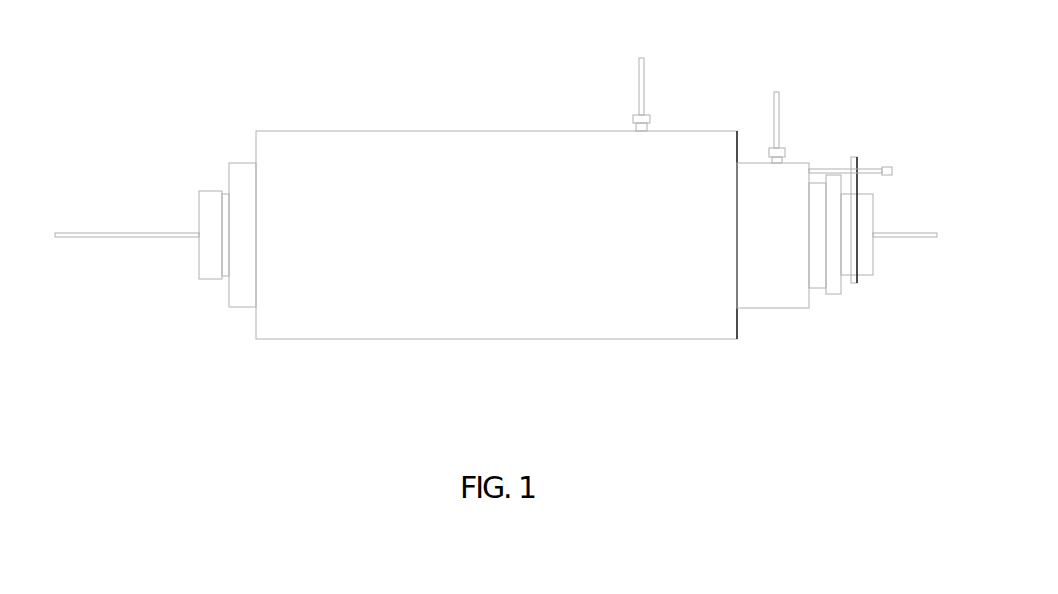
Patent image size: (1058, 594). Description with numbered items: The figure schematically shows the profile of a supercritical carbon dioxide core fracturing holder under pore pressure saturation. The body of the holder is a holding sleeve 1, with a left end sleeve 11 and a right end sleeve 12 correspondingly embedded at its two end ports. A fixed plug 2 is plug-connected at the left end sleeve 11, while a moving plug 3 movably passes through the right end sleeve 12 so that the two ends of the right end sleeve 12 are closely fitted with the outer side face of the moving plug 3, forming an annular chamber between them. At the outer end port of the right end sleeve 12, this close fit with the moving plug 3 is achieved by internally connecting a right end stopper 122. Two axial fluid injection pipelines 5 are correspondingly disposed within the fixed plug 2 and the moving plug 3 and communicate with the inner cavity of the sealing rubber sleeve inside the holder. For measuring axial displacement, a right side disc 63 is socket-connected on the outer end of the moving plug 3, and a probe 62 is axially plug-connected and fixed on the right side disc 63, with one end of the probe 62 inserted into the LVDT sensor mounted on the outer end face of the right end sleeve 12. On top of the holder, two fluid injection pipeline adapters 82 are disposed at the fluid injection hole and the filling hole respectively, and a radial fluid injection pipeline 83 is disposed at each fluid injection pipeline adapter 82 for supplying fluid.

The holding sleeve 1 is at (372, 148).
The left end sleeve 11 is at (251, 169).
The right end sleeve 12 is at (768, 300).
The right end stopper 122 is at (834, 289).
The fixed plug 2 is at (199, 200).
The moving plug 3 is at (867, 267).
The axial fluid injection pipeline 5 is at (98, 233).
The probe 62 is at (888, 167).
The right side disc 63 is at (854, 157).
The fluid injection pipeline adapter 82 is at (769, 147).
The radial fluid injection pipeline 83 is at (775, 92).